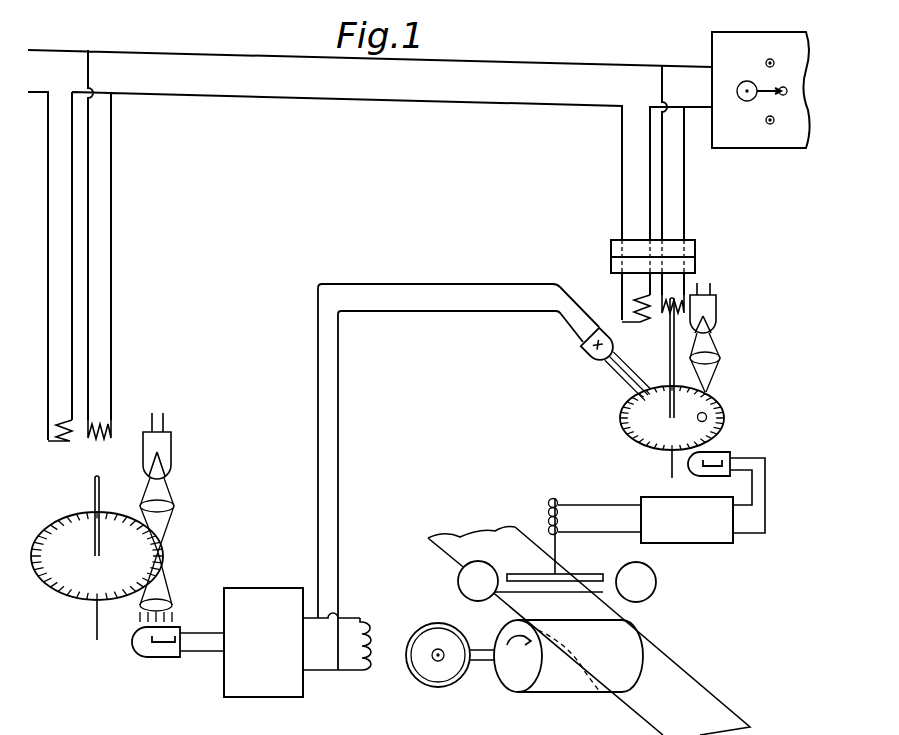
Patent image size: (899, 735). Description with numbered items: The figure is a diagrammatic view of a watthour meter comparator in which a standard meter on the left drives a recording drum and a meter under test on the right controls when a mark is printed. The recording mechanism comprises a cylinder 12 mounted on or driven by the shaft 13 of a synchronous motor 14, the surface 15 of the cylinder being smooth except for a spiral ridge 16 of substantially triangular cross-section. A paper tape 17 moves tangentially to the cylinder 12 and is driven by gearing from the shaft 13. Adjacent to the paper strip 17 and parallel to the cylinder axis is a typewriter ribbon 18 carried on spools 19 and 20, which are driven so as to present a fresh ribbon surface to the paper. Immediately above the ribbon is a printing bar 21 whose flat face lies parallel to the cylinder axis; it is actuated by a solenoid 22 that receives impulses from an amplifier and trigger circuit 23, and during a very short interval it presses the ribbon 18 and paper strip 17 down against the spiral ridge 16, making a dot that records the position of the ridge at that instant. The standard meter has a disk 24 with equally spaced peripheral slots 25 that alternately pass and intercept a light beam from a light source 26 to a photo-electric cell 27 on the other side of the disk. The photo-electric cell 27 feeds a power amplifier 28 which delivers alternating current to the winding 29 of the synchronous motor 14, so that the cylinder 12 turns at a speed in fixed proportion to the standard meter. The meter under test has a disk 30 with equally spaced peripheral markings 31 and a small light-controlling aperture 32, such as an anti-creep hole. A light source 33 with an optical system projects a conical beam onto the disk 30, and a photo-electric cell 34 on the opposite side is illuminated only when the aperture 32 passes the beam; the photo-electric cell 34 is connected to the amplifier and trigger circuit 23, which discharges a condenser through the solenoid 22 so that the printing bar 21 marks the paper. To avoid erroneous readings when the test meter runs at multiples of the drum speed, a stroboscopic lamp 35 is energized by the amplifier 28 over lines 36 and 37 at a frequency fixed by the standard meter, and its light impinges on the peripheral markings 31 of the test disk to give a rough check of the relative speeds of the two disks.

The cylinder 12 is at (510, 682).
The shaft 13 is at (484, 662).
The synchronous motor 14 is at (434, 688).
The surface 15 is at (557, 686).
The spiral ridge 16 is at (528, 618).
The paper tape 17 is at (692, 688).
The typewriter ribbon 18 is at (612, 598).
The spool 19 is at (458, 581).
The spool 20 is at (650, 582).
The printing bar 21 is at (578, 576).
The solenoid 22 is at (546, 509).
The amplifier and trigger circuit 23 is at (702, 532).
The disk 24 is at (80, 566).
The peripheral slots 25 is at (82, 593).
The light source 26 is at (172, 452).
The photo-electric cell 27 is at (132, 649).
The power amplifier 28 is at (273, 650).
The winding 29 is at (374, 662).
The disk 30 is at (660, 427).
The peripheral markings 31 is at (634, 441).
The light-controlling aperture 32 is at (707, 417).
The light source 33 is at (716, 320).
The photo-electric cell 34 is at (724, 453).
The stroboscopic lamp 35 is at (588, 354).
The line 36 is at (573, 316).
The line 37 is at (568, 327).